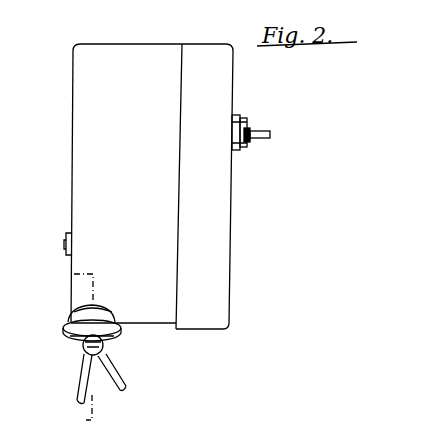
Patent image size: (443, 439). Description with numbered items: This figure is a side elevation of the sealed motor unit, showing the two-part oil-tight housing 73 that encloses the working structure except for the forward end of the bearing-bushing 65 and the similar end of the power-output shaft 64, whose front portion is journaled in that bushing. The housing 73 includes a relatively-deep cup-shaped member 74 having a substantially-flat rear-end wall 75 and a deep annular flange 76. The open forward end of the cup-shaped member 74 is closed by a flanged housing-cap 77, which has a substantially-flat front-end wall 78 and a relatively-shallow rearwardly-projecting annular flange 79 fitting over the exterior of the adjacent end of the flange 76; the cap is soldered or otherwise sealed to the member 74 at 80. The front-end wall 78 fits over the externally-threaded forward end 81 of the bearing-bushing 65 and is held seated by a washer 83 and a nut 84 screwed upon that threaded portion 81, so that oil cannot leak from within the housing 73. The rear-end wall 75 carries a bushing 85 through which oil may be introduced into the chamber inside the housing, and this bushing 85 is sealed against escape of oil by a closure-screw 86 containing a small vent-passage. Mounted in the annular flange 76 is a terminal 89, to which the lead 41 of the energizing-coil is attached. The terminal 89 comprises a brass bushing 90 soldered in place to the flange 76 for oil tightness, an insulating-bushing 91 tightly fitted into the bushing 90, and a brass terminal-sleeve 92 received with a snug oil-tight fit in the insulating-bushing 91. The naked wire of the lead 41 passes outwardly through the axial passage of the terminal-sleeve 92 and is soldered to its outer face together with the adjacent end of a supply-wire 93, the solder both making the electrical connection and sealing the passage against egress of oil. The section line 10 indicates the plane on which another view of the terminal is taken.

The section line 10 is at (72, 274).
The lead 41 is at (82, 341).
The power-output shaft 64 is at (264, 140).
The bearing-bushing 65 is at (253, 128).
The housing 73 is at (197, 43).
The cup-shaped member 74 is at (89, 42).
The rear-end wall 75 is at (72, 122).
The annular flange 76 is at (133, 43).
The housing-cap 77 is at (226, 331).
The front-end wall 78 is at (232, 272).
The annular flange 79 is at (190, 330).
The sealed joint 80 is at (172, 330).
The externally-threaded forward end 81 is at (251, 141).
The washer 83 is at (237, 152).
The nut 84 is at (248, 120).
The bushing 85 is at (70, 232).
The closure-screw 86 is at (66, 248).
The terminal 89 is at (68, 332).
The bushing 90 is at (80, 311).
The insulating-bushing 91 is at (118, 333).
The terminal-sleeve 92 is at (110, 343).
The supply-wire 93 is at (78, 393).